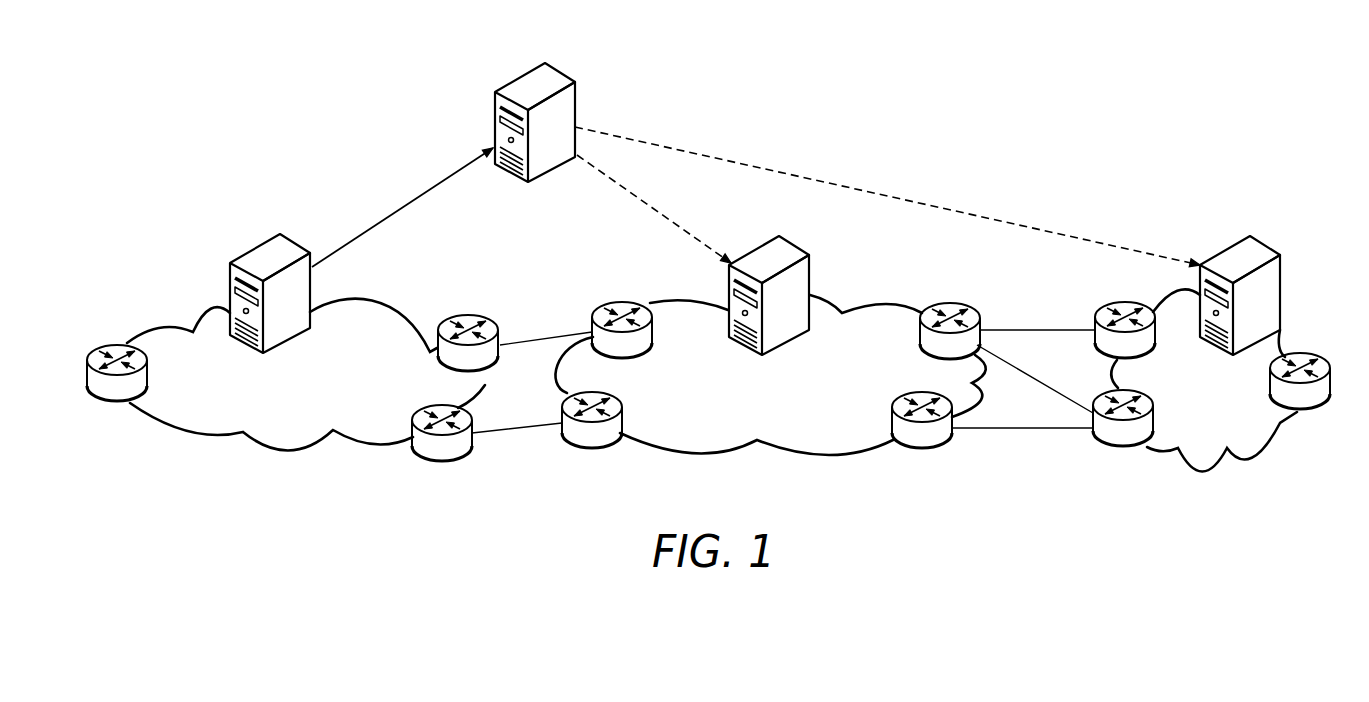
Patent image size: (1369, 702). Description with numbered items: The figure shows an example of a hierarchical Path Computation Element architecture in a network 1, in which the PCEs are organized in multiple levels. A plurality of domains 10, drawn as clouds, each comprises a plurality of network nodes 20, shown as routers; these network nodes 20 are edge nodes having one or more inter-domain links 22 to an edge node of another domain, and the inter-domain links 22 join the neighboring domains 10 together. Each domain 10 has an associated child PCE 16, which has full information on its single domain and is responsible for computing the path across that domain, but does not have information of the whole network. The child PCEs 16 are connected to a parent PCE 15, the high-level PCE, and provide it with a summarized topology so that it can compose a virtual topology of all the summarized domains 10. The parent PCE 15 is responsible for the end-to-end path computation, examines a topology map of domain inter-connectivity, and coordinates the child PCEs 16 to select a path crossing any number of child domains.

The network 1 is at (201, 137).
The domain 10 is at (295, 455).
The parent PCE 15 is at (510, 83).
The child PCE 16 is at (247, 257).
The network node 20 is at (117, 345).
The inter-domain link 22 is at (527, 425).